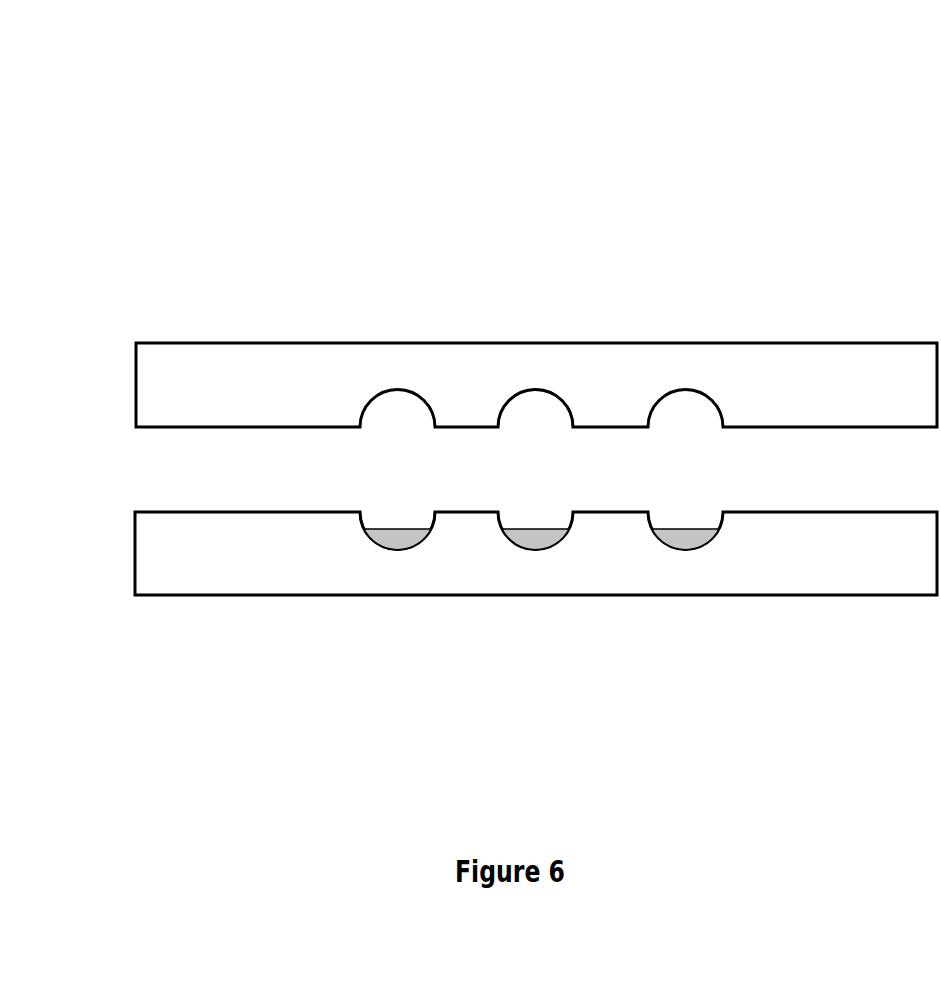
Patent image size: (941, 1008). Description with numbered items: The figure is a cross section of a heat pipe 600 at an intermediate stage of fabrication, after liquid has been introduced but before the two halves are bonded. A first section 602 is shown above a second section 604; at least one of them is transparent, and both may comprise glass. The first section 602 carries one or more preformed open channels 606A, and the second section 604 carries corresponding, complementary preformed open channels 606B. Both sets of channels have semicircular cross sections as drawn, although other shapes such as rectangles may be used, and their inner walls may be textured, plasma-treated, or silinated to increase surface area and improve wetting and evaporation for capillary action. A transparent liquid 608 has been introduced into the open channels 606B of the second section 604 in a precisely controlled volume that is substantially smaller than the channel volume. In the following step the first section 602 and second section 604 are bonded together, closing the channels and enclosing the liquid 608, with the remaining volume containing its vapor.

The heat pipe 600 is at (147, 152).
The first section 602 is at (753, 358).
The second section 604 is at (843, 567).
The preformed open channels 606A is at (552, 407).
The preformed open channels 606B is at (358, 518).
The transparent liquid 608 is at (563, 529).